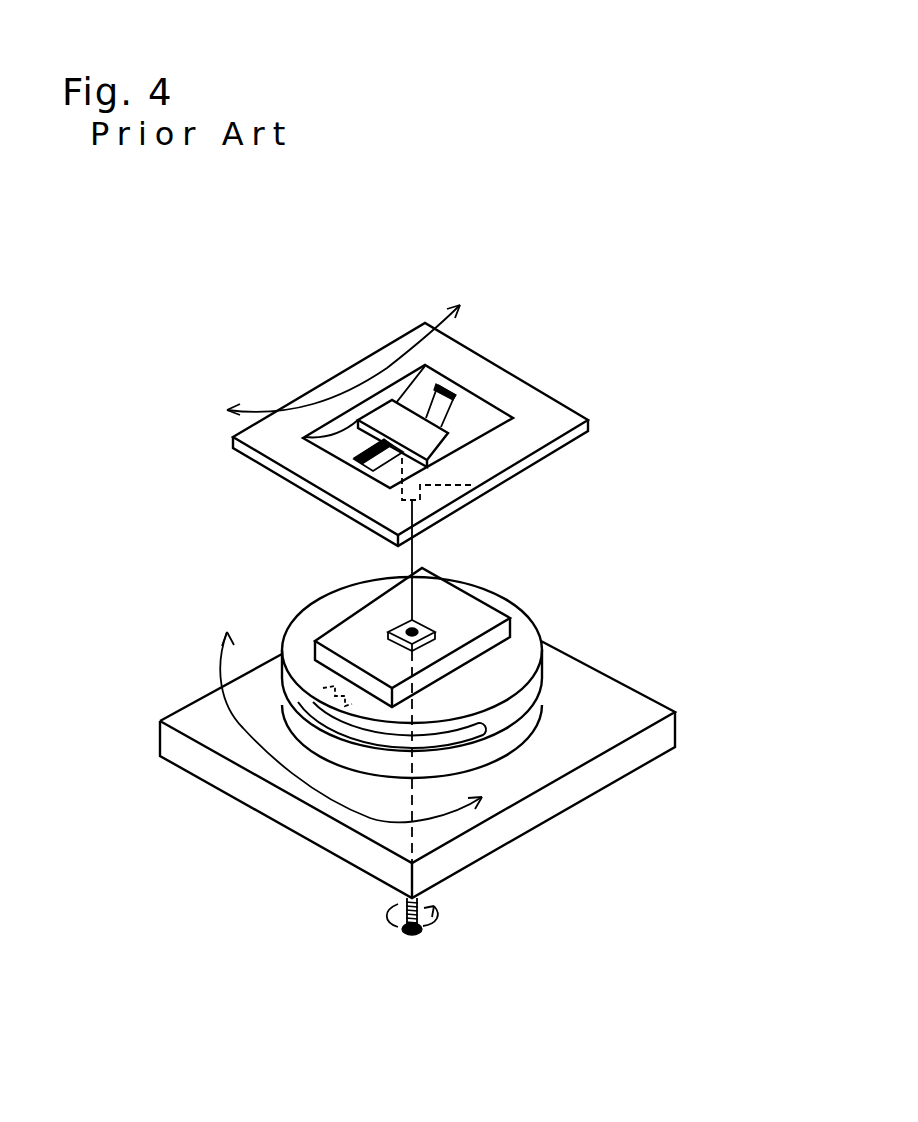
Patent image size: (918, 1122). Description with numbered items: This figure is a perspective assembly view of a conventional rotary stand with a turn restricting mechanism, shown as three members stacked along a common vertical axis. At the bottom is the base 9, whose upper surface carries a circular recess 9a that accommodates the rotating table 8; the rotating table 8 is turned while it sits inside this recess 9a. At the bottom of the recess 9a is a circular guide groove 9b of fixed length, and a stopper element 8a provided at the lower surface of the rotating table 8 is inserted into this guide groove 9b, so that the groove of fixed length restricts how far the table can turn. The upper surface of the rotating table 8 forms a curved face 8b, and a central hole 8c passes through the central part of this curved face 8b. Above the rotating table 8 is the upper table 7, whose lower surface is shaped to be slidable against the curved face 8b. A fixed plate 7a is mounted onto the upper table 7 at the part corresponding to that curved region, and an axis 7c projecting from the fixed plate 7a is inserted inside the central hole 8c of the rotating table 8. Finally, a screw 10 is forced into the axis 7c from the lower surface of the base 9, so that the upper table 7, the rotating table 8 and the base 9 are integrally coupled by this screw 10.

The upper table 7 is at (510, 372).
The fixed plate 7a is at (435, 443).
The axis 7c is at (475, 486).
The rotating table 8 is at (557, 627).
The stopper element 8a is at (322, 693).
The curved face 8b is at (353, 637).
The central hole 8c is at (415, 630).
The base 9 is at (647, 769).
The circular recess 9a is at (513, 738).
The circular guide groove 9b is at (372, 752).
The screw 10 is at (420, 930).